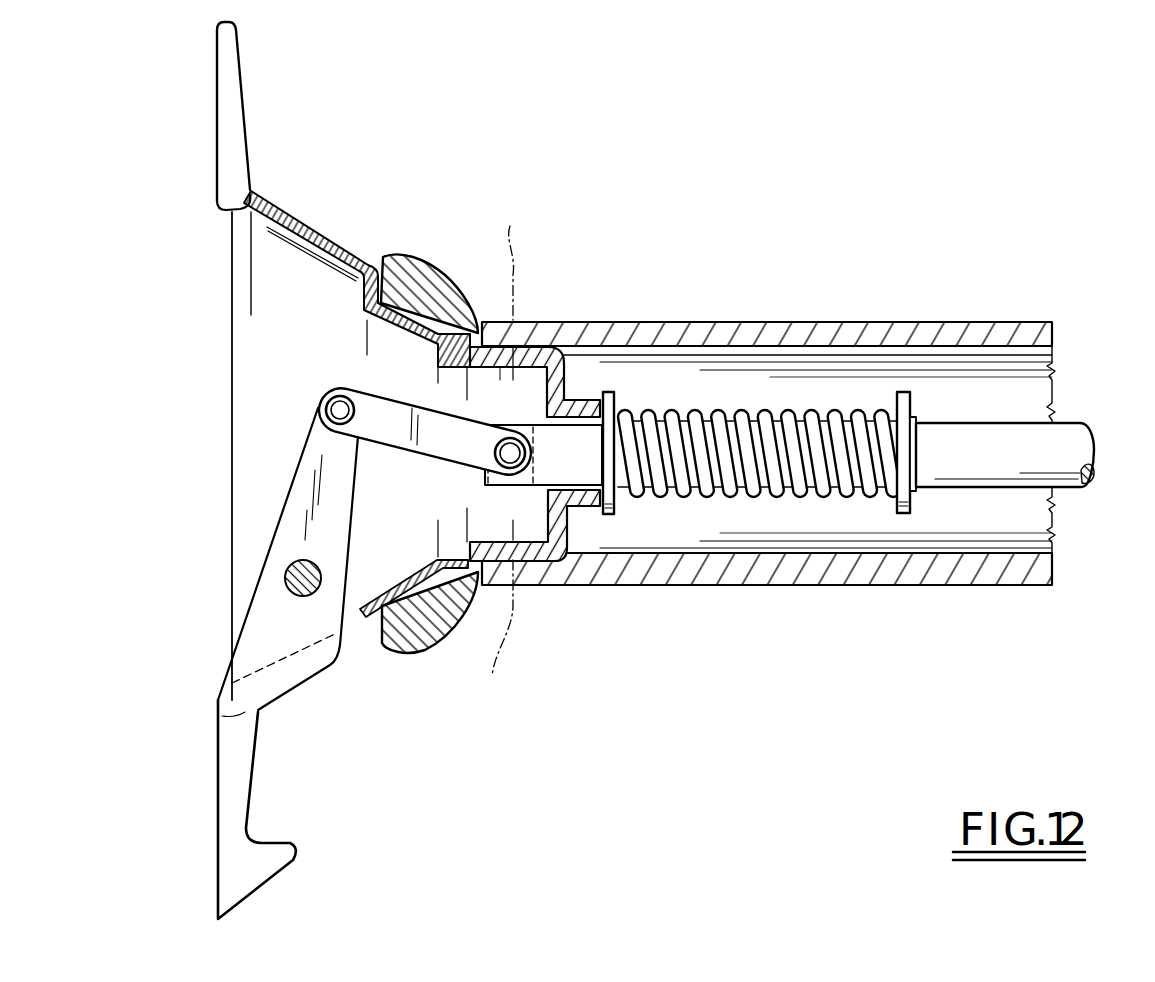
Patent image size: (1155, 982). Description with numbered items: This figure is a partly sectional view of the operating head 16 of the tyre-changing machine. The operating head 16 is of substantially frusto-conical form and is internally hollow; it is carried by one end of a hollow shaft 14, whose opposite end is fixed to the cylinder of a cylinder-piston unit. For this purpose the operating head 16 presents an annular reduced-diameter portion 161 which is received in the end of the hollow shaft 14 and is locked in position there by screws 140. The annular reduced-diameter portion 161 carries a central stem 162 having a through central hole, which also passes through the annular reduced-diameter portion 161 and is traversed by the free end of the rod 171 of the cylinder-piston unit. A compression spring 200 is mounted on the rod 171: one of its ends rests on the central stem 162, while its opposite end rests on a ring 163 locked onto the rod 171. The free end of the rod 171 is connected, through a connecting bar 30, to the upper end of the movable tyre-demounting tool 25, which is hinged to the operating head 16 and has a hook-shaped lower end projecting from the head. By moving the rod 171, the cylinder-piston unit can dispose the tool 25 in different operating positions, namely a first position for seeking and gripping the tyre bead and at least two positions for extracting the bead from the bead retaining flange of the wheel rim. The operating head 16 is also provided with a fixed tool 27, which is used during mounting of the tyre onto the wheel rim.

The hollow shaft 14 is at (1005, 587).
The operating head 16 is at (320, 232).
The tyre-demounting tool 25 is at (222, 814).
The fixed tool 27 is at (217, 120).
The connecting bar 30 is at (382, 392).
The screws 140 is at (496, 451).
The annular reduced-diameter portion 161 is at (540, 558).
The central stem 162 is at (590, 347).
The ring 163 is at (905, 392).
The rod 171 is at (1068, 424).
The compression spring 200 is at (775, 497).